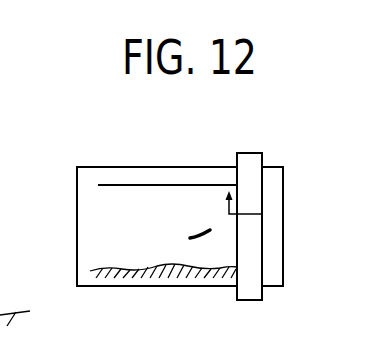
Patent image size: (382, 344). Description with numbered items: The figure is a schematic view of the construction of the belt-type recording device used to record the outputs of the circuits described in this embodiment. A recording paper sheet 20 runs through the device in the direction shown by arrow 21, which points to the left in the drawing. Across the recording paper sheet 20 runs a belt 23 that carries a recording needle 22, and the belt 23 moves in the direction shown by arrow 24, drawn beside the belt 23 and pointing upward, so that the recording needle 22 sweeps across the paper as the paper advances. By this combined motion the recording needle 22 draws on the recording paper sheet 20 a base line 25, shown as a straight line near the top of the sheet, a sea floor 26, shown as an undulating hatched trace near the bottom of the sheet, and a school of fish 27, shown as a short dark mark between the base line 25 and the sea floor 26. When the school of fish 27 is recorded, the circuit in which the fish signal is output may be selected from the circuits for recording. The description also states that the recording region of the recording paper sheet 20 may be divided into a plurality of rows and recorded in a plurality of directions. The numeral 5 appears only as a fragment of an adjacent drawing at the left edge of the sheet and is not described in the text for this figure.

The recording paper sheet 20 is at (77, 176).
The arrow 21 is at (182, 146).
The recording needle 22 is at (226, 202).
The belt 23 is at (249, 157).
The arrow 24 is at (297, 205).
The base line 25 is at (113, 186).
The sea floor 26 is at (112, 272).
The school of fish 27 is at (197, 231).
The element of adjacent figure (partial) 5 is at (0, 290).